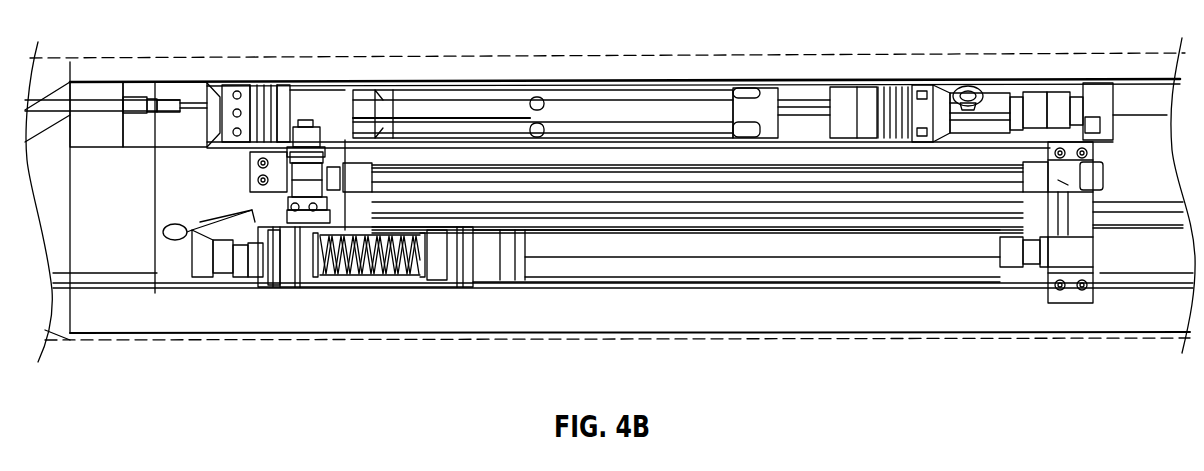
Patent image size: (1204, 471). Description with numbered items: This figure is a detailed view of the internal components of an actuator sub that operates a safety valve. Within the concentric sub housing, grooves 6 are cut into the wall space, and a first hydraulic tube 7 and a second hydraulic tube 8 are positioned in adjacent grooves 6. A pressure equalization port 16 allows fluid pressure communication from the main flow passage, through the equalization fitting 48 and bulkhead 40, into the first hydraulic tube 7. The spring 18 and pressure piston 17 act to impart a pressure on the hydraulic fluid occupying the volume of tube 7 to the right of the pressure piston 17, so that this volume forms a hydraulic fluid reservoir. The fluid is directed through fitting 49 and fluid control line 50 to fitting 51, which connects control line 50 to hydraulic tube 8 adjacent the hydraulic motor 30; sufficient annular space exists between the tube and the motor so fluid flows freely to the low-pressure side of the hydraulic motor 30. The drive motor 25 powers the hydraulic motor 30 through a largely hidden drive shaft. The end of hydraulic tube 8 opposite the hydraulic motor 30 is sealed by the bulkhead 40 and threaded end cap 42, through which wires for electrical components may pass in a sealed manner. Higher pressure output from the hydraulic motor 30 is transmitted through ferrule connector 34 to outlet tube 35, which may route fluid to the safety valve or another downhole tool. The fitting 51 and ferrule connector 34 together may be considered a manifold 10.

The grooves 6 is at (1143, 80).
The first hydraulic tube 7 is at (823, 290).
The second hydraulic tube 8 is at (818, 78).
The manifold 10 is at (287, 175).
The pressure equalization port 16 is at (177, 240).
The pressure piston 17 is at (497, 265).
The spring 18 is at (360, 273).
The drive motor 25 is at (560, 100).
The hydraulic motor 30 is at (295, 90).
The ferrule connector 34 is at (177, 93).
The outlet tube 35 is at (85, 88).
The bulkhead 40 is at (1045, 95).
The threaded end cap 42 is at (1097, 90).
The equalization fitting 48 is at (228, 275).
The fitting 49 is at (1087, 250).
The fluid control line 50 is at (712, 178).
The fitting 51 is at (315, 157).